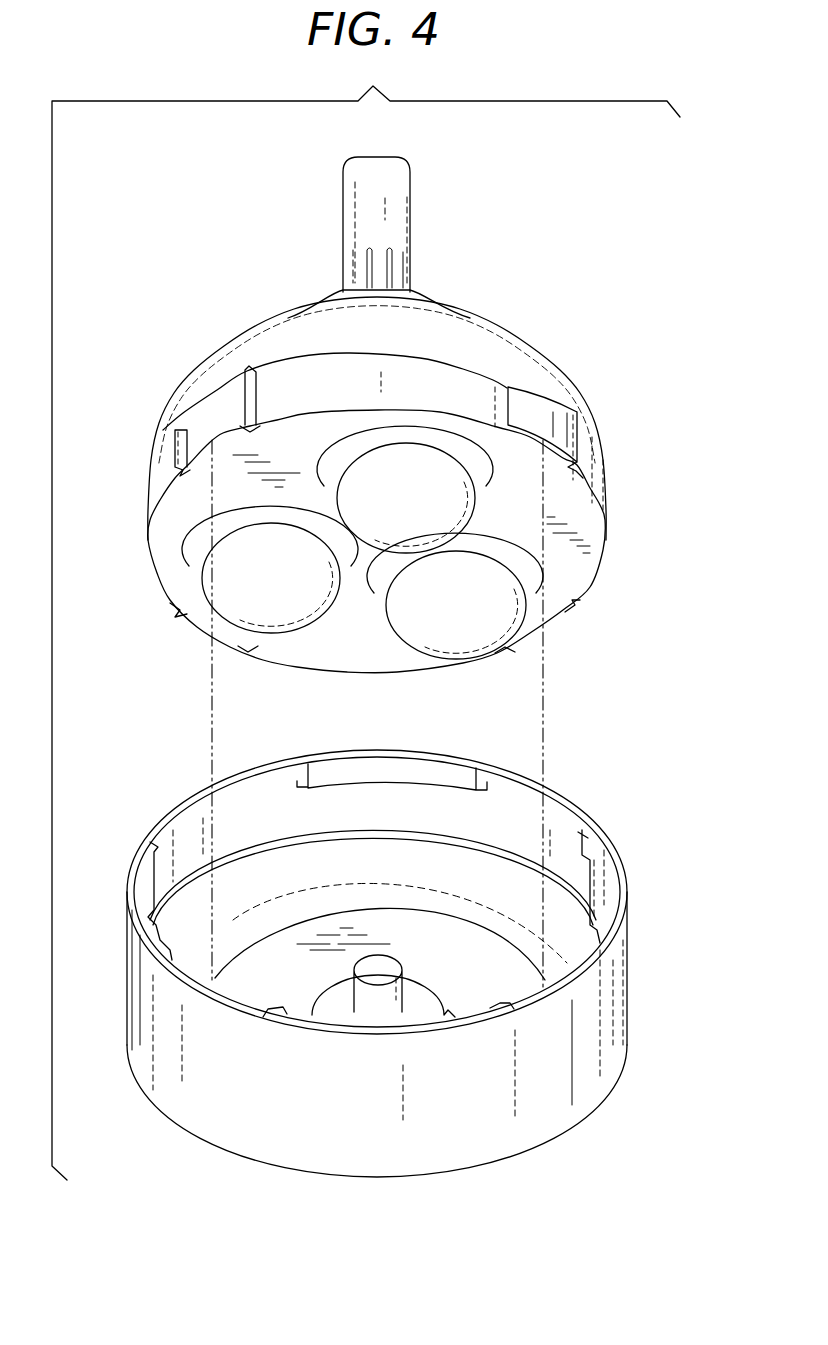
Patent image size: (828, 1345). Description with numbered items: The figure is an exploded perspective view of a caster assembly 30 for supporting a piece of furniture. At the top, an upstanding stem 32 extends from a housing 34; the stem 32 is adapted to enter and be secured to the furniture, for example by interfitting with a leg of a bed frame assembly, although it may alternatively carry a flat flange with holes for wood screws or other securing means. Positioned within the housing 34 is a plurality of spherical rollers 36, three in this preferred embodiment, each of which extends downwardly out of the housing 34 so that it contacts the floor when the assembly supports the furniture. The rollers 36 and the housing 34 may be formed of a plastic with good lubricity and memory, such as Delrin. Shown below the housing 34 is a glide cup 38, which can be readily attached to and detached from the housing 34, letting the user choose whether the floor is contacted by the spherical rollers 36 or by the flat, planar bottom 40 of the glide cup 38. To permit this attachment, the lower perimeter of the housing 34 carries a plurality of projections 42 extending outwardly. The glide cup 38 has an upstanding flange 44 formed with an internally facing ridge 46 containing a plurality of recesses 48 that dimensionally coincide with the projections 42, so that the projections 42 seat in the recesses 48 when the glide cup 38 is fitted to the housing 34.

The caster assembly 30 is at (728, 612).
The upstanding stem 32 is at (405, 207).
The housing 34 is at (486, 340).
The spherical rollers 36 is at (440, 513).
The glide cup 38 is at (407, 951).
The flat, planar bottom 40 is at (537, 1148).
The projection 42 is at (190, 430).
The upstanding flange 44 is at (607, 835).
The internally facing ridge 46 is at (390, 768).
The recesses 48 is at (183, 822).